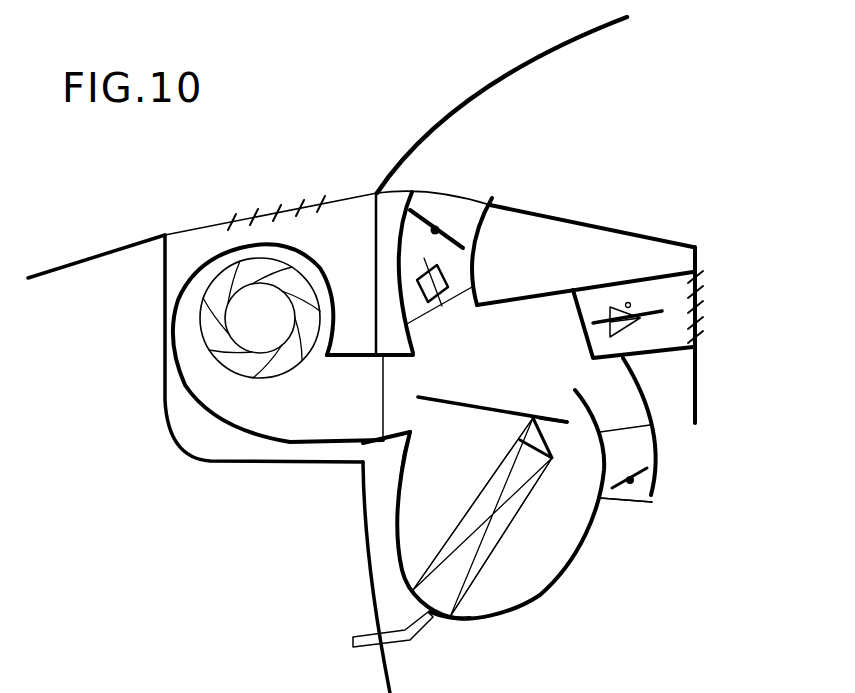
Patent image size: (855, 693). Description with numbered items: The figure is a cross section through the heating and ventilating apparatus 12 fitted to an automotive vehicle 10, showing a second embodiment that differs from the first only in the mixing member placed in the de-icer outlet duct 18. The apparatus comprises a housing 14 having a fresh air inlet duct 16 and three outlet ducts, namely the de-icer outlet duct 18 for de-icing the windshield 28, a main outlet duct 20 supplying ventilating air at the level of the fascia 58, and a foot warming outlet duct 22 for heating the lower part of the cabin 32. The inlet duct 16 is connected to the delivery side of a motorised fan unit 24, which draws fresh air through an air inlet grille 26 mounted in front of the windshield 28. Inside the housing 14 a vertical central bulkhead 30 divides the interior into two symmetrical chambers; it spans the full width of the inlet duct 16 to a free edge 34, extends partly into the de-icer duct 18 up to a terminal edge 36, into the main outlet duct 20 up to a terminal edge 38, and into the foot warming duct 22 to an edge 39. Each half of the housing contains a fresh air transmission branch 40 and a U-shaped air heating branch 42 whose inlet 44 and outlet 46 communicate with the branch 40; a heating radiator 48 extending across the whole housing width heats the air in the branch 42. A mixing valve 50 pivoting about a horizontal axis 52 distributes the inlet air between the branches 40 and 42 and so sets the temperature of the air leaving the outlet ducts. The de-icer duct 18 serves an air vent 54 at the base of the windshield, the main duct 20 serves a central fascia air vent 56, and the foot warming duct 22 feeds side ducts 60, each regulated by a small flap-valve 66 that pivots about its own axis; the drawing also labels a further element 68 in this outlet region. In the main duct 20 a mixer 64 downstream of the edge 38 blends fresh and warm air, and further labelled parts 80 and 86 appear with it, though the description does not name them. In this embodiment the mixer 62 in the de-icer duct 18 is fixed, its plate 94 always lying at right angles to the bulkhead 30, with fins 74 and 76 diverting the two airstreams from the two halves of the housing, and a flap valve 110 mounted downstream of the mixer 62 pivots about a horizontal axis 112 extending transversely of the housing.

The automotive vehicle 10 is at (437, 121).
The heating and ventilating apparatus 12 is at (566, 580).
The housing 14 is at (492, 623).
The fresh air inlet duct 16 is at (371, 455).
The de-icer outlet duct 18 is at (479, 257).
The main outlet duct 20 is at (624, 276).
The foot warming outlet duct 22 is at (659, 488).
The motorised fan unit 24 is at (176, 385).
The air inlet grille 26 is at (250, 207).
The windshield 28 is at (410, 158).
The central bulkhead 30 is at (407, 535).
The cabin 32 is at (780, 380).
The free edge 34 is at (383, 405).
The terminal edge 36 is at (452, 304).
The terminal edge 38 is at (580, 306).
The edge 39 is at (628, 425).
The fresh air transmission branch 40 is at (449, 397).
The air heating branch 42 is at (513, 572).
The inlet 44 is at (439, 470).
The outlet 46 is at (535, 413).
The heating radiator 48 is at (458, 605).
The mixing valve 50 is at (432, 403).
The horizontal axis 52 is at (532, 417).
The air vent 54 is at (413, 207).
The central fascia air vent 56 is at (700, 333).
The fascia 58 is at (699, 403).
The duct 60 is at (633, 503).
The mixer 62 is at (411, 267).
The mixer 64 is at (627, 339).
The flap-valve 66 is at (637, 472).
The outlet flap 68 is at (629, 480).
The fin 74 is at (417, 288).
The fin 76 is at (475, 291).
The damper pivot 80 is at (632, 327).
The damper linkage 86 is at (628, 303).
The plate 94 is at (375, 212).
The flap valve 110 is at (419, 201).
The horizontal axis 112 is at (441, 231).